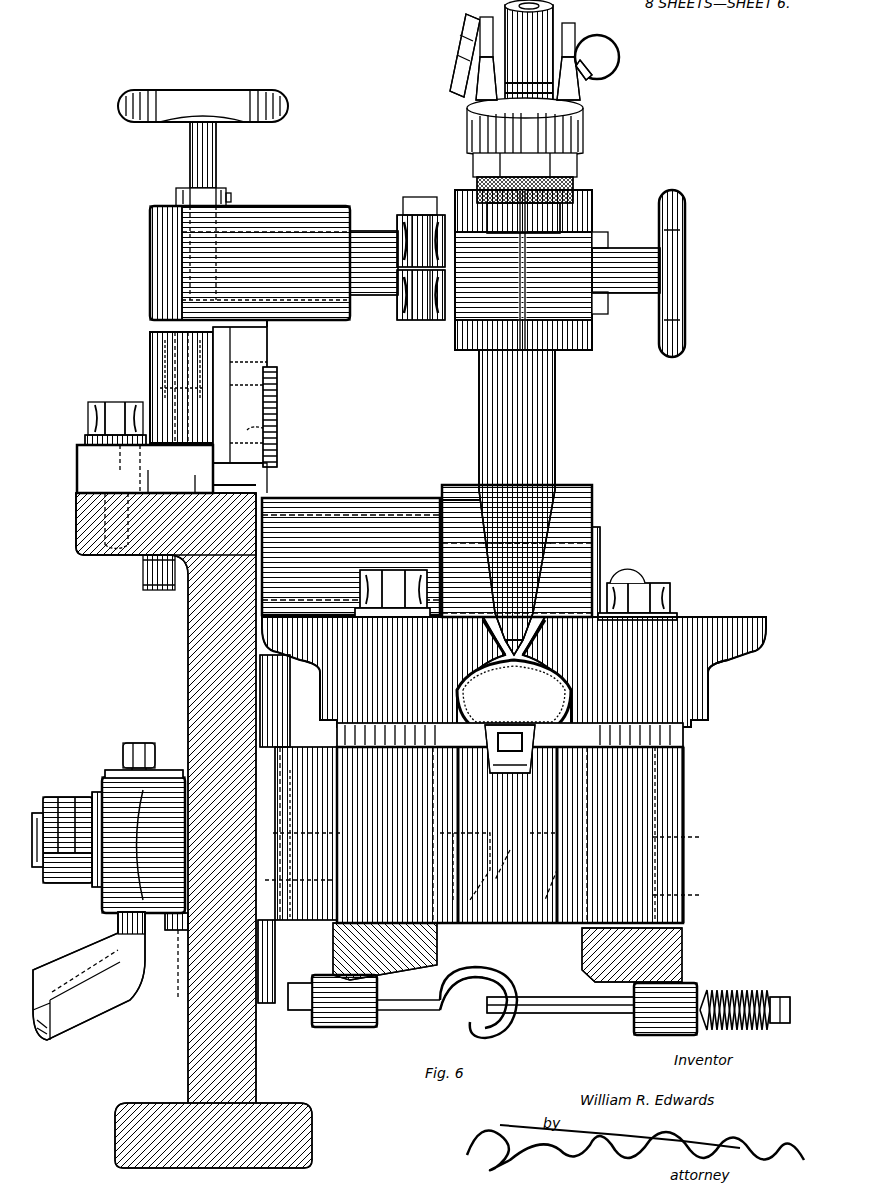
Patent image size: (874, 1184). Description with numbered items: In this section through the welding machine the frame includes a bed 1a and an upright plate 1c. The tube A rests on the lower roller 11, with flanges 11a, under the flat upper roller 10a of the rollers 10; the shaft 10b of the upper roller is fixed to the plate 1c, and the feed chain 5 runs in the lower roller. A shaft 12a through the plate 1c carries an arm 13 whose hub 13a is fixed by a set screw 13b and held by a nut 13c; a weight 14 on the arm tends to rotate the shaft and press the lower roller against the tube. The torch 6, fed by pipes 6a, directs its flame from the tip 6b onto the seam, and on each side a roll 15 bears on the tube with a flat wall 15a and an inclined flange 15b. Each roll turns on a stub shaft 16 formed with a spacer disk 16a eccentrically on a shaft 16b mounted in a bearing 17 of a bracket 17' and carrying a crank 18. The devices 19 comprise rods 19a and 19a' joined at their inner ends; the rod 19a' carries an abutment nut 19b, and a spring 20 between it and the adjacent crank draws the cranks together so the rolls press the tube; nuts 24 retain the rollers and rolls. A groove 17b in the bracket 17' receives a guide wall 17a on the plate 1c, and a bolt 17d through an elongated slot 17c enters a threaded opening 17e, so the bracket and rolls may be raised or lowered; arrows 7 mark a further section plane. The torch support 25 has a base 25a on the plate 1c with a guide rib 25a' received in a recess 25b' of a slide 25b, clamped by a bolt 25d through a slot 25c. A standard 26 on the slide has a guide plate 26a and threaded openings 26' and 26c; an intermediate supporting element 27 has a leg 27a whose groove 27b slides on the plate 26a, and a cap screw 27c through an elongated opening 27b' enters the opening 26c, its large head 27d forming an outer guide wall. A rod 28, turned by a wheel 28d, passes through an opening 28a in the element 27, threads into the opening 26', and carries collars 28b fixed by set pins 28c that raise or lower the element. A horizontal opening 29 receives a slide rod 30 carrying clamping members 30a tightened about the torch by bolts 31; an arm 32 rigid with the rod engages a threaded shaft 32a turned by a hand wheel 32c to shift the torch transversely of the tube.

The bed 1a is at (122, 1128).
The plate 1c is at (190, 680).
The propelling device 5 is at (540, 762).
The torch 6 is at (557, 392).
The pipes 6a is at (471, 18).
The tip 6b is at (520, 638).
The section line 7 is at (20, 733).
The pairs of upper and lower rollers 10 is at (530, 543).
The upper roller 10a is at (450, 485).
The shaft 10b is at (635, 565).
The lower roller 11 is at (510, 925).
The flanges 11a is at (456, 925).
The shaft 12a is at (37, 868).
The arm 13 is at (100, 1013).
The hub 13a is at (108, 773).
The set screw 13b is at (123, 752).
The nut 13c is at (60, 800).
The weight 14 is at (66, 412).
The movable rolls 15 is at (514, 663).
The flat wall 15a is at (710, 705).
The inclined wall or flange 15b is at (740, 670).
The stub shaft 16 is at (650, 587).
The disk 16a is at (338, 735).
The shaft 16b is at (686, 895).
The bearings 17 is at (531, 835).
The bracket 17' is at (708, 835).
The guide wall 17a is at (275, 706).
The groove 17b is at (278, 790).
The elongated slot 17c is at (180, 960).
The bolt 17d is at (190, 930).
The screw threaded opening 17e is at (287, 925).
The crank 18 is at (349, 1029).
The devices 19 is at (560, 1021).
The rod 19a is at (447, 1011).
The rod 19a' is at (637, 1014).
The nut 19b is at (785, 997).
The spring 20 is at (735, 990).
The nuts 24 is at (615, 582).
The supporting means 25 is at (154, 439).
The base 25a is at (130, 575).
The guide rib 25a' is at (161, 472).
The slide 25b is at (256, 489).
The recess 25b' is at (184, 482).
The elongated slot 25c is at (80, 473).
The bolt 25d is at (88, 425).
The standard 26 is at (149, 387).
The screw threaded opening 26' is at (146, 366).
The plate 26a is at (226, 478).
The screw threaded opening 26c is at (150, 388).
The intermediate supporting element 27 is at (152, 280).
The leg 27a is at (268, 346).
The groove 27b is at (277, 372).
The elongated opening 27b' is at (277, 413).
The cap screw 27c is at (278, 430).
The head of the screw 27d is at (235, 462).
The rod 28 is at (217, 152).
The opening 28a is at (240, 232).
The collars 28b is at (185, 190).
The set pins 28c is at (178, 198).
The wheel 28d is at (244, 96).
The opening 29 is at (306, 232).
The slide rod 30 is at (372, 231).
The clamping members 30a is at (457, 348).
The bolts 31 is at (606, 238).
The arm 32 is at (422, 197).
The shaft 32a is at (634, 248).
The hand wheel 32c is at (687, 222).
The tube A is at (533, 716).